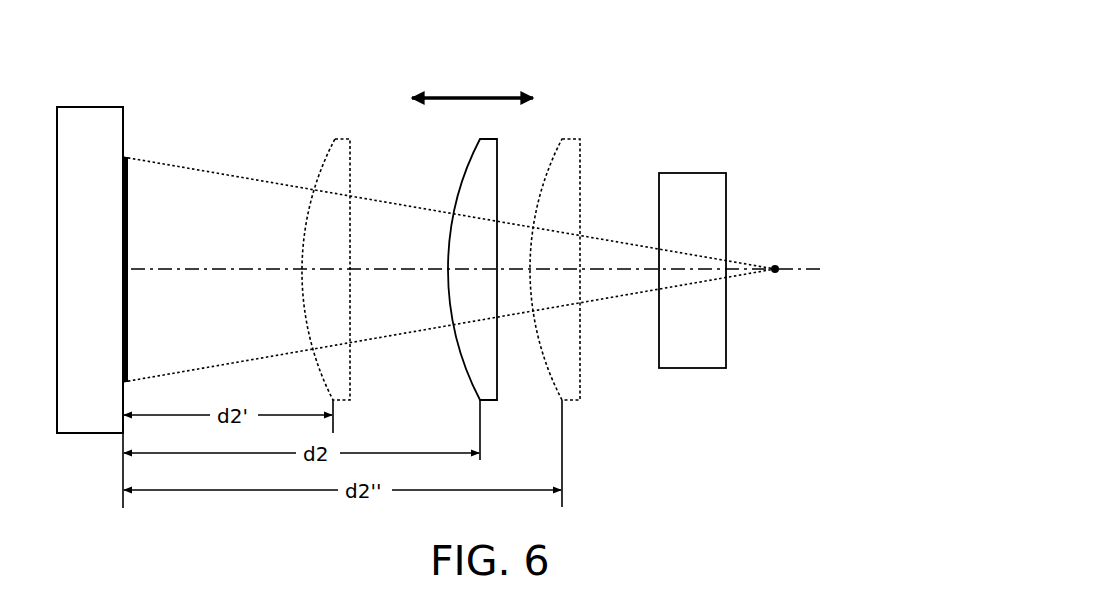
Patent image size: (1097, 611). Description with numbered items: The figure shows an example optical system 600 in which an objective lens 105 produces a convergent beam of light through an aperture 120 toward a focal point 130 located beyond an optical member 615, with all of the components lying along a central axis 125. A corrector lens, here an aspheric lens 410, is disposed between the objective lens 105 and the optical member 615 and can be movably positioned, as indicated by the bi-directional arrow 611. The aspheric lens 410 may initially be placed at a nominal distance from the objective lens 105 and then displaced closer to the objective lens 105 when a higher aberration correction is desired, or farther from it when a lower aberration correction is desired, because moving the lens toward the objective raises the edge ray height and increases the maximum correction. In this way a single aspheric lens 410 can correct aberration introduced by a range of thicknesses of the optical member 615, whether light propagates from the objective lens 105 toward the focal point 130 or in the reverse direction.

The optical system 600 is at (678, 45).
The objective lens 105 is at (121, 127).
The aperture 120 is at (127, 235).
The central axis 125 is at (170, 271).
The aspheric lens 410 is at (320, 173).
The optical member 615 is at (725, 204).
The focal point 130 is at (775, 266).
The bi-directional arrow 611 is at (460, 97).